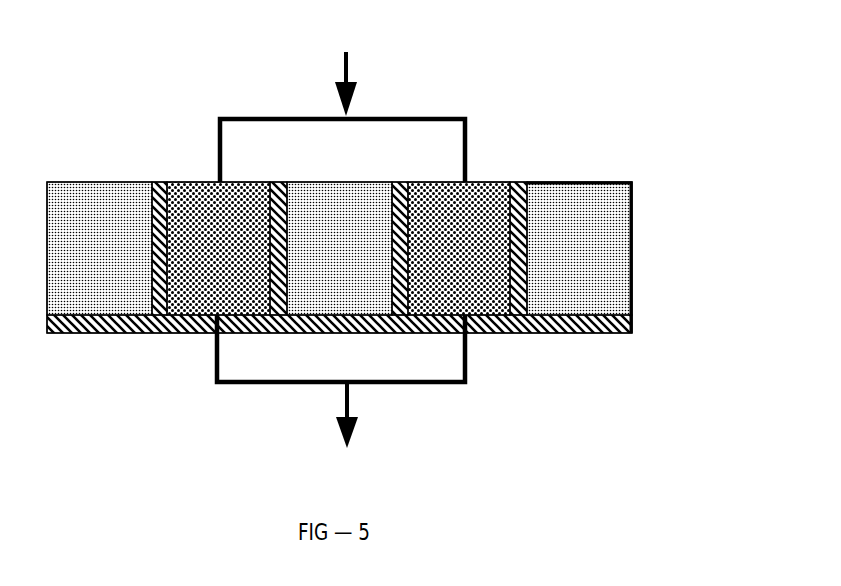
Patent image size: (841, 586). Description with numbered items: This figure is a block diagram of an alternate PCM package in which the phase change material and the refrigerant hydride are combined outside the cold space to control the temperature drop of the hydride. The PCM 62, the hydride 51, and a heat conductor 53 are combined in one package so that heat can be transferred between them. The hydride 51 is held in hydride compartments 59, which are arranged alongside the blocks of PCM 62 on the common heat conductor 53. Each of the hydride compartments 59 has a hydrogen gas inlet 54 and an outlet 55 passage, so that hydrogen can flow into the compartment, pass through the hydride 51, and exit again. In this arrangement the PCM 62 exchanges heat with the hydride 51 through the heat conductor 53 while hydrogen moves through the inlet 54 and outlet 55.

The PCM 62 is at (110, 195).
The hydride 51 is at (185, 307).
The hydride compartments 59 is at (490, 190).
The heat conductor 53 is at (528, 337).
The hydrogen gas inlet 54 is at (355, 75).
The outlet 55 is at (357, 430).